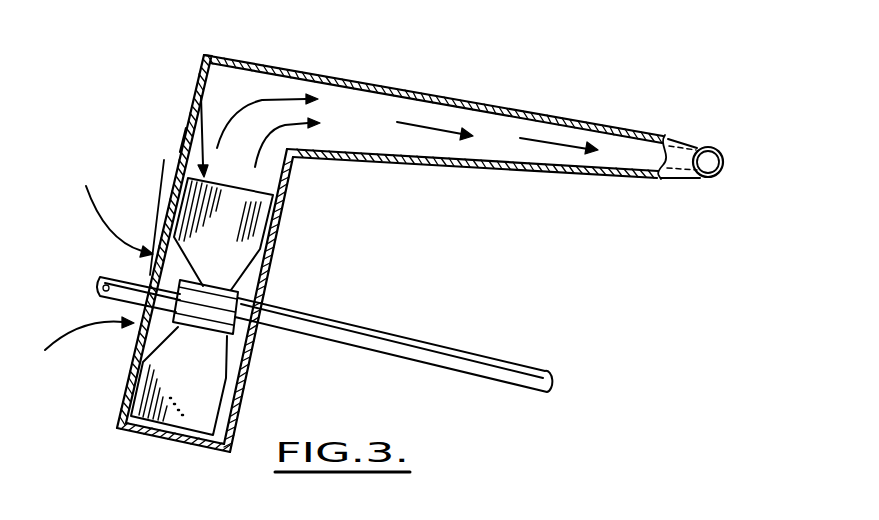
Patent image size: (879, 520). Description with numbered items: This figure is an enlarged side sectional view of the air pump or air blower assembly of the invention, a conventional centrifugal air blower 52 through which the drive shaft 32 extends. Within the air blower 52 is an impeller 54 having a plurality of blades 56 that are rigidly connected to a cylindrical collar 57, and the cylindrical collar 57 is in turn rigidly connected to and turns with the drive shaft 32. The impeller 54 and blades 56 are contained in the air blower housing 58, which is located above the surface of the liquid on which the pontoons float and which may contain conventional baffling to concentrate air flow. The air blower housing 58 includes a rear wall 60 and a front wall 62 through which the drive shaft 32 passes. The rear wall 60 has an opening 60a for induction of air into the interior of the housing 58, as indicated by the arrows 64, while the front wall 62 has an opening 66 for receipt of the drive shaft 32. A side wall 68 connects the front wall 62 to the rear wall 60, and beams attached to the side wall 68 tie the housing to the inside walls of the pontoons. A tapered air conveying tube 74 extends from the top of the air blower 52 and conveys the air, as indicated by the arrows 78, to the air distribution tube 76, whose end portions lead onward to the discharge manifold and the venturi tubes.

The drive shaft 32 is at (410, 342).
The centrifugal air blower 52 is at (299, 48).
The impeller 54 is at (197, 93).
The blades 56 is at (247, 217).
The cylindrical collar 57 is at (240, 295).
The air blower housing 58 is at (205, 45).
The rear wall 60 is at (185, 132).
The opening 60a is at (161, 175).
The front wall 62 is at (285, 237).
The arrows 64 is at (105, 228).
The opening 66 is at (253, 340).
The side wall 68 is at (293, 178).
The tapered air conveying tube 74 is at (509, 92).
The air distribution tube 76 is at (713, 147).
The arrows 78 is at (270, 143).